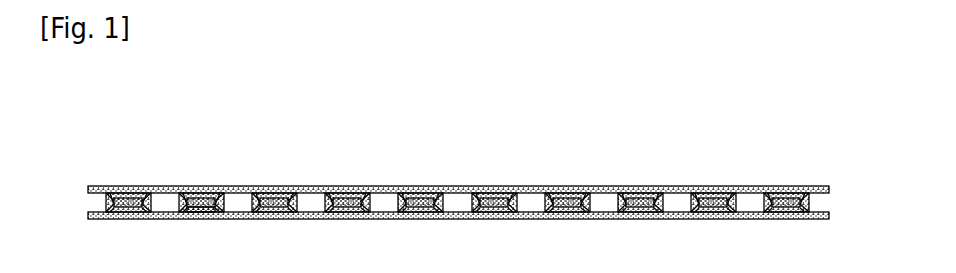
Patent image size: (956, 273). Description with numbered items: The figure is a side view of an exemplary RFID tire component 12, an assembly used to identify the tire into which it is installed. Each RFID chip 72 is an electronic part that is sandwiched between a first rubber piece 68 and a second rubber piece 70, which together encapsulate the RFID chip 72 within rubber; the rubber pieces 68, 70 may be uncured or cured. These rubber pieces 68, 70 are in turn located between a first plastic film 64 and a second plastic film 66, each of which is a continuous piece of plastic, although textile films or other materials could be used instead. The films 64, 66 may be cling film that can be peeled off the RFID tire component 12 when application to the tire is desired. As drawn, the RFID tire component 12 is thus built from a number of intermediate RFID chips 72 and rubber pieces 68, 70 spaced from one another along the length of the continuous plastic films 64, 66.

The RFID tire component 12 is at (619, 160).
The first plastic film 64 is at (385, 190).
The second plastic film 66 is at (385, 215).
The first rubber piece 68 is at (204, 195).
The second rubber piece 70 is at (203, 210).
The RFID chip 72 is at (198, 196).